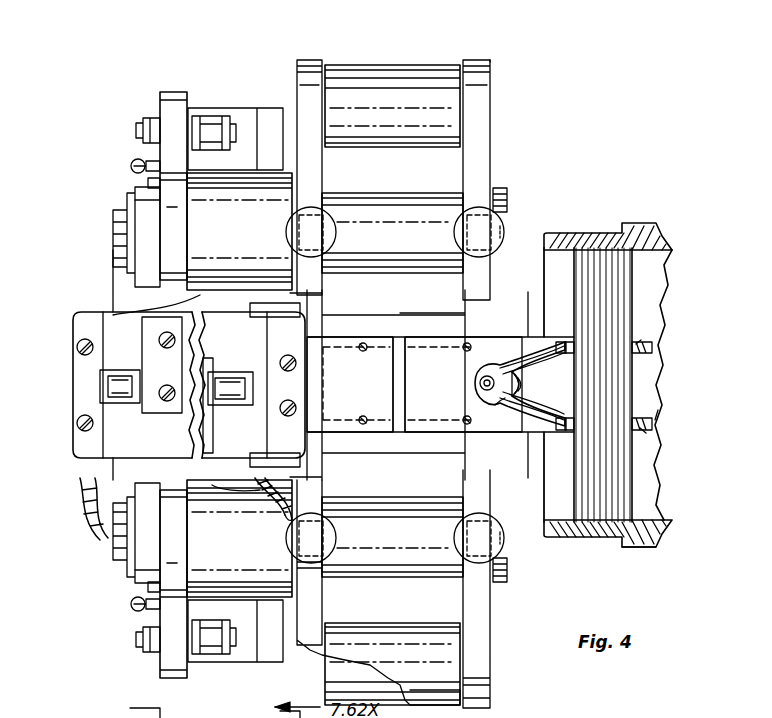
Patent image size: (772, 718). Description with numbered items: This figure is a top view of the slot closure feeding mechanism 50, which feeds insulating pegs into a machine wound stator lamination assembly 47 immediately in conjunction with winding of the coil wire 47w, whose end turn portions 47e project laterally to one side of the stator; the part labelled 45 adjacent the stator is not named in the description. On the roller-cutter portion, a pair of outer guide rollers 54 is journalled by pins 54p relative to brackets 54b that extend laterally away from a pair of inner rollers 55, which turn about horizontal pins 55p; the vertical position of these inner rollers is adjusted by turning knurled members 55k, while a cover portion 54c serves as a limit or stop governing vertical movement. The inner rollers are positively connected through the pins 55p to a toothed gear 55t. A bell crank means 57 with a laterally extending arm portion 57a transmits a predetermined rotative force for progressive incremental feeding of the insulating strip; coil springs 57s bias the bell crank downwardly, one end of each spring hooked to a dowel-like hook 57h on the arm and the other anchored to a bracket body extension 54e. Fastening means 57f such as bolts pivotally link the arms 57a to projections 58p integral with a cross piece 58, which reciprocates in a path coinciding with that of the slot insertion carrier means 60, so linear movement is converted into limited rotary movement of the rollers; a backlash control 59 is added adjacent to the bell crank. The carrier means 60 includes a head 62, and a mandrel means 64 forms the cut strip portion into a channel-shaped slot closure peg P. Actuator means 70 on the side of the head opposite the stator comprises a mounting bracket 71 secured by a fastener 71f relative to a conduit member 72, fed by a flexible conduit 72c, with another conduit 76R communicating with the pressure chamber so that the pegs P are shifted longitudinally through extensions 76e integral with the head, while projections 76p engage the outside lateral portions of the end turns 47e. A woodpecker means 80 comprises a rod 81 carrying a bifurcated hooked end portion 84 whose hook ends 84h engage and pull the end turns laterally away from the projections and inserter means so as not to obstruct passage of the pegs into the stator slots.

The plate body 45 is at (656, 546).
The stator lamination assembly 47 is at (622, 290).
The end turn portions of the coil wire 47e is at (520, 420).
The coil wire 47w is at (652, 413).
The mechanism for feeding slot closure means 50 is at (536, 73).
The outer guide rollers 54 is at (432, 66).
The bracket or support means 54b is at (313, 60).
The cover portion 54c is at (314, 204).
The bracket body extension 54e is at (140, 204).
The shaft or pins 54p is at (463, 108).
The inner rollers 55 is at (432, 266).
The knurled members 55k is at (452, 222).
The shafts or pins 55p is at (513, 232).
The toothed gear 55t is at (510, 200).
The bell crank means 57 is at (175, 232).
The laterally extending arm portion 57a is at (170, 92).
The fastening means 57f is at (146, 126).
The pin or dowel-like hook 57h is at (147, 184).
The coil springs 57s is at (132, 162).
The cross piece 58 is at (272, 112).
The projections 58p is at (205, 112).
The backlash control 59 is at (212, 485).
The slot insertion carrier means 60 is at (481, 345).
The head 62 is at (340, 340).
The mandrel means 64 is at (396, 383).
The actuator means 70 is at (78, 325).
The mounting bracket 71 is at (85, 390).
The fastener 71f is at (286, 405).
The conduit member 72 is at (258, 486).
The flexible conduit 72c is at (272, 528).
The extension 76e is at (522, 337).
The projections 76p is at (556, 337).
The conduit 76R is at (80, 512).
The woodpecker means 80 is at (470, 410).
The rod 81 is at (485, 383).
The bifurcated and doubled hooked end portion 84 is at (506, 393).
The hook ends 84h is at (520, 410).
The slot closure means or peg P is at (641, 340).